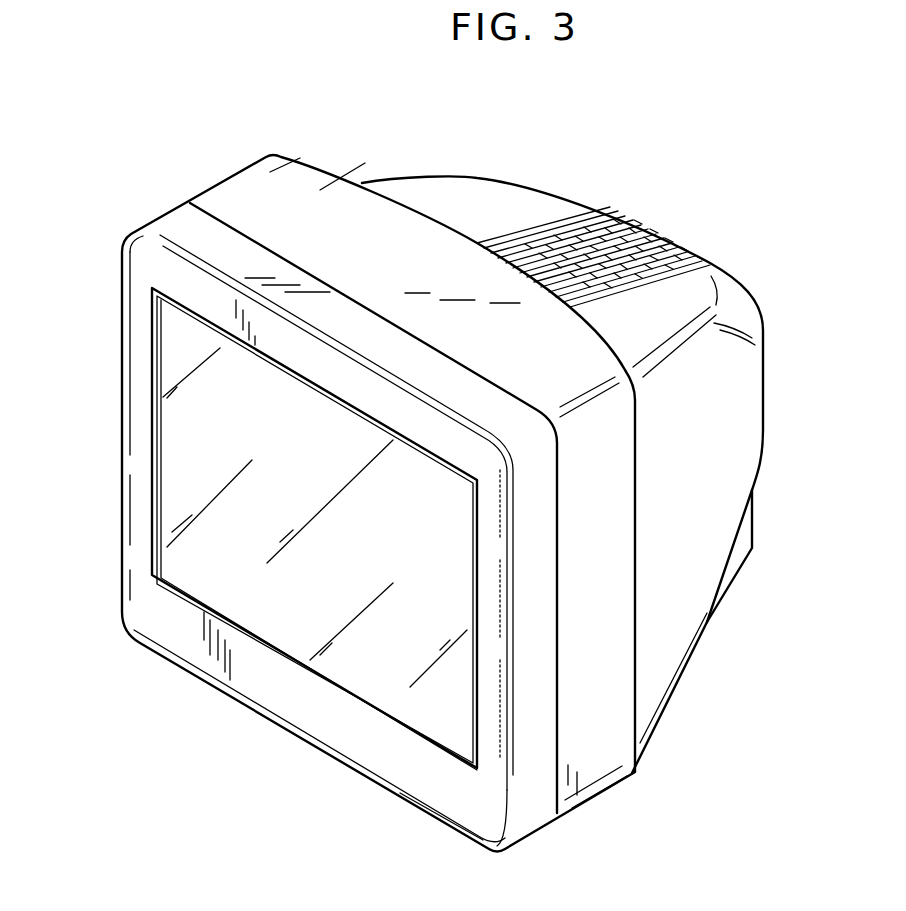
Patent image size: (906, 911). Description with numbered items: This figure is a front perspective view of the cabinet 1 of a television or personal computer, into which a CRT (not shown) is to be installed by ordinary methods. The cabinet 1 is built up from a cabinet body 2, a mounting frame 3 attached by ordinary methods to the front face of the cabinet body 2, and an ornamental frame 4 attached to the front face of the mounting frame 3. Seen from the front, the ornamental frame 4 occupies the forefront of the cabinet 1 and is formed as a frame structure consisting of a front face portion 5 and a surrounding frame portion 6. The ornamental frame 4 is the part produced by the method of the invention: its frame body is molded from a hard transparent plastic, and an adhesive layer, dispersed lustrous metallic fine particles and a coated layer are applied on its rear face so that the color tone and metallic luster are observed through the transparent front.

The cabinet 1 is at (110, 401).
The cabinet body 2 is at (747, 397).
The mounting frame 3 is at (617, 488).
The ornamental frame 4 is at (132, 555).
The front face portion 5 is at (292, 712).
The surrounding frame portion 6 is at (470, 392).